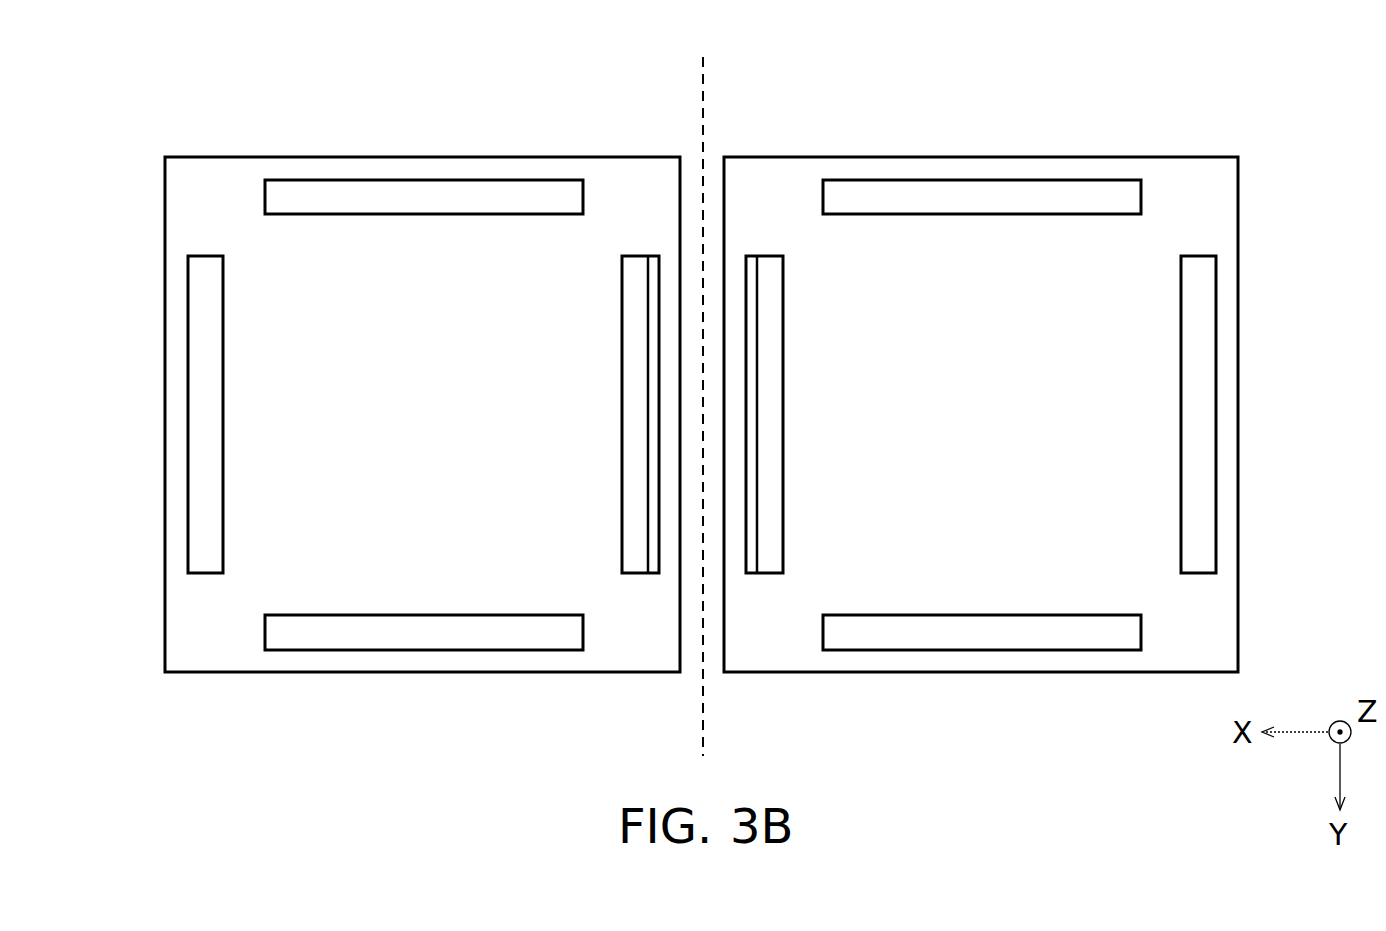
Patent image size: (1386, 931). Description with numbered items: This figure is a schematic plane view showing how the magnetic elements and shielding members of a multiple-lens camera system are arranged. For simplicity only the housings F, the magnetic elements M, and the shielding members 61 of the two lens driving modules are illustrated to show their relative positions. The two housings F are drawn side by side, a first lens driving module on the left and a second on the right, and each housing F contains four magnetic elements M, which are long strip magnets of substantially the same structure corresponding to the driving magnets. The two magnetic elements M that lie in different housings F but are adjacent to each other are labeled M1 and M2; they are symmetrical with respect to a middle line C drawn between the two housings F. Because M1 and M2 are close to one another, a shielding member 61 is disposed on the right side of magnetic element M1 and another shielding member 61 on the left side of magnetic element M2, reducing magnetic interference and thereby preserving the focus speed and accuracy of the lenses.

The housing F is at (222, 155).
The magnetic element M is at (425, 196).
The magnetic element M1 is at (635, 282).
The magnetic element M2 is at (770, 282).
The shielding member 61 is at (652, 560).
The middle line C is at (703, 388).